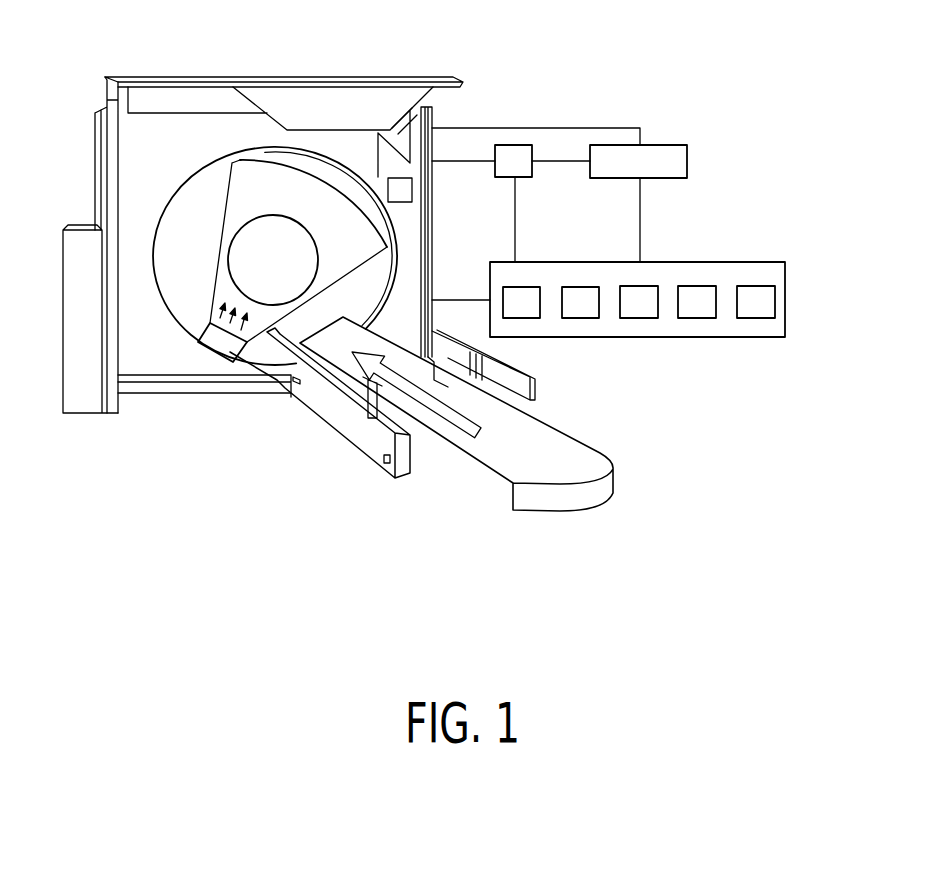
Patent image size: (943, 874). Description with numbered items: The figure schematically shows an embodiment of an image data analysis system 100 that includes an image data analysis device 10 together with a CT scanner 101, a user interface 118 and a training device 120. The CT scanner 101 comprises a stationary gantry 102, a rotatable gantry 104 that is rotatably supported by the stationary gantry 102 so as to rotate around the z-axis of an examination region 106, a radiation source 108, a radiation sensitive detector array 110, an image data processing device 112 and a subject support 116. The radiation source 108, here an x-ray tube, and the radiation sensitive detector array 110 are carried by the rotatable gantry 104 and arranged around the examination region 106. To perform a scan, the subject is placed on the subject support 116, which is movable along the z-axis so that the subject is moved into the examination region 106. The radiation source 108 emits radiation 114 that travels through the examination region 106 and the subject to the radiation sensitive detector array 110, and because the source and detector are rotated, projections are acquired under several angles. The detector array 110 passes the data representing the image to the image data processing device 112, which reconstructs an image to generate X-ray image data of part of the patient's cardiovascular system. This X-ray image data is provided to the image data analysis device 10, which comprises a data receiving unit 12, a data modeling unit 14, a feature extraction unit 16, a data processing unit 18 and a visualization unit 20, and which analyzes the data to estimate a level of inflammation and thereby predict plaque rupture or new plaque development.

The image data analysis system 100 is at (755, 88).
The CT scanner 101 is at (478, 57).
The stationary gantry 102 is at (138, 168).
The rotatable gantry 104 is at (238, 217).
The examination region 106 is at (275, 235).
The radiation source 108 is at (217, 343).
The radiation sensitive detector array 110 is at (330, 172).
The image data processing device 112 is at (412, 190).
The radiation 114 is at (243, 330).
The subject support 116 is at (540, 467).
The user interface 118 is at (663, 143).
The training device 120 is at (518, 143).
The image data analysis device 10 is at (737, 272).
The data receiving unit 12 is at (519, 293).
The data modeling unit 14 is at (592, 316).
The feature extraction unit 16 is at (645, 316).
The data processing unit 18 is at (704, 316).
The visualization unit 20 is at (763, 316).